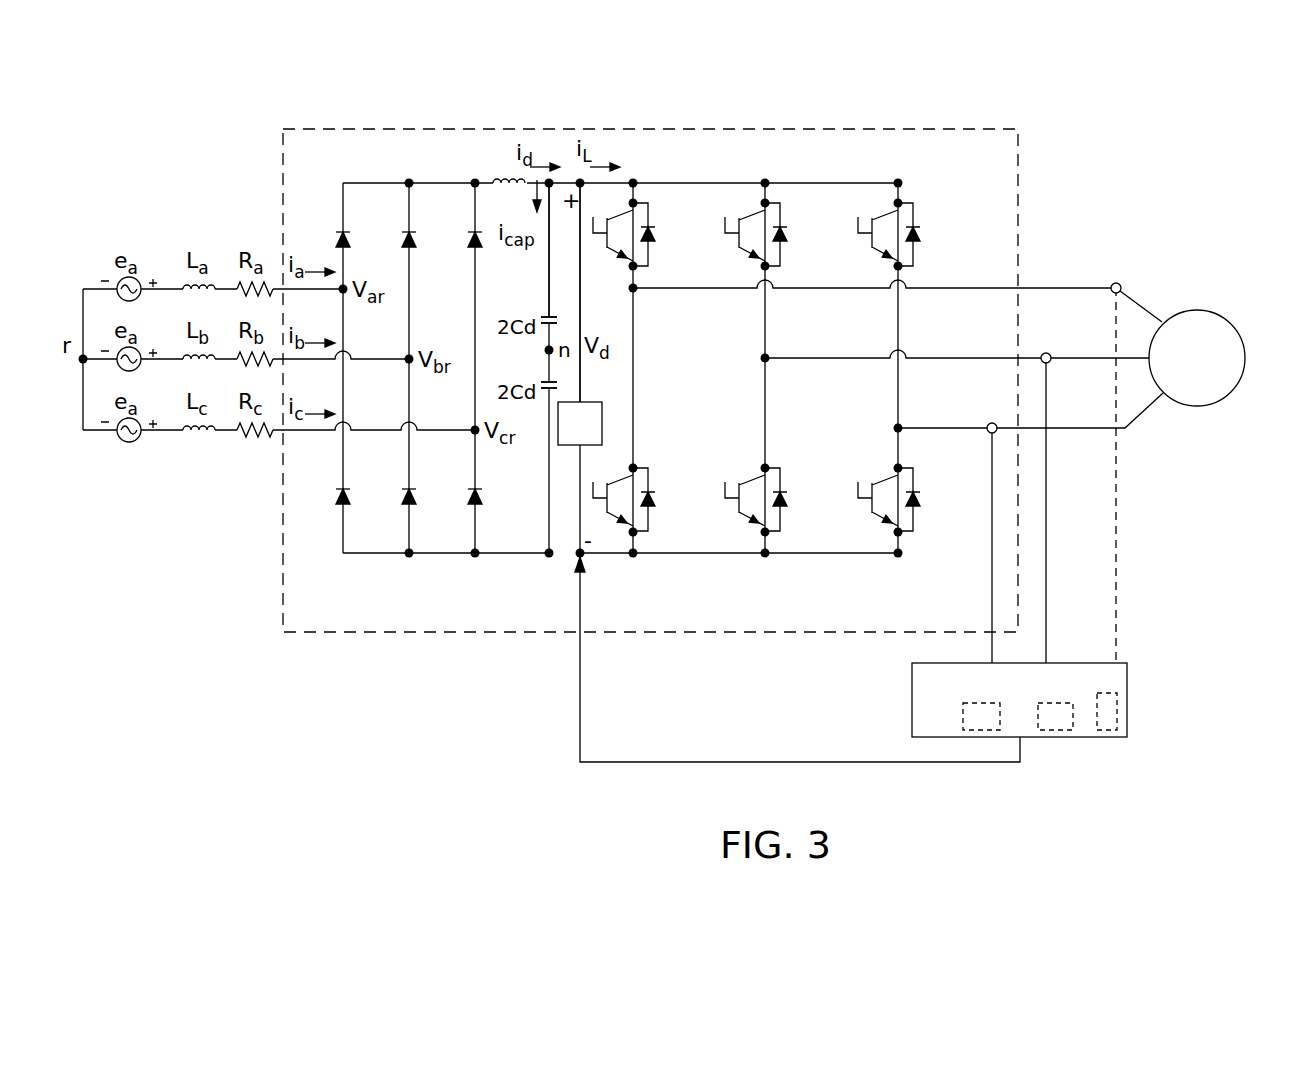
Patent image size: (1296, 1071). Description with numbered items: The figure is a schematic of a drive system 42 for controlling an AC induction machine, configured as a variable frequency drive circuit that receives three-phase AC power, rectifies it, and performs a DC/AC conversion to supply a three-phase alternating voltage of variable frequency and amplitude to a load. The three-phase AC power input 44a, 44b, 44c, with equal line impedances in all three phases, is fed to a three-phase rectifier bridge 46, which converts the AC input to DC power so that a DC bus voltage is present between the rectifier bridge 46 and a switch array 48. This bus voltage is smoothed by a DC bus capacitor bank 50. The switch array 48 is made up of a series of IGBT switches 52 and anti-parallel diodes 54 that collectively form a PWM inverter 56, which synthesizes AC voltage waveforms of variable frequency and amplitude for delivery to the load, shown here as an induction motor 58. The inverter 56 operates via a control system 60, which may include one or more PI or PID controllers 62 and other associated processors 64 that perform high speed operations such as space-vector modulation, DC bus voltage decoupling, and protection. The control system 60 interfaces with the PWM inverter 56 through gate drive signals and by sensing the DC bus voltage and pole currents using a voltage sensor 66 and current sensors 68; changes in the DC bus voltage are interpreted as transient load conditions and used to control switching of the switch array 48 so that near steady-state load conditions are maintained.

The drive system 42 is at (1020, 162).
The three-phase AC power input 44a is at (140, 296).
The three-phase AC power input 44b is at (140, 366).
The three-phase AC power input 44c is at (140, 437).
The three-phase rectifier bridge 46 is at (363, 572).
The switch array 48 is at (871, 408).
The DC bus capacitor bank 50 is at (600, 385).
The IGBT switches 52 is at (741, 357).
The anti-parallel diodes 54 is at (916, 496).
The PWM inverter 56 is at (717, 408).
The induction motor 58 is at (1233, 322).
The control system 60 is at (1023, 699).
The PI or PID controllers 62 is at (1073, 720).
The associated processors 64 is at (1118, 712).
The voltage sensor 66 is at (603, 422).
The current sensors 68 is at (988, 424).